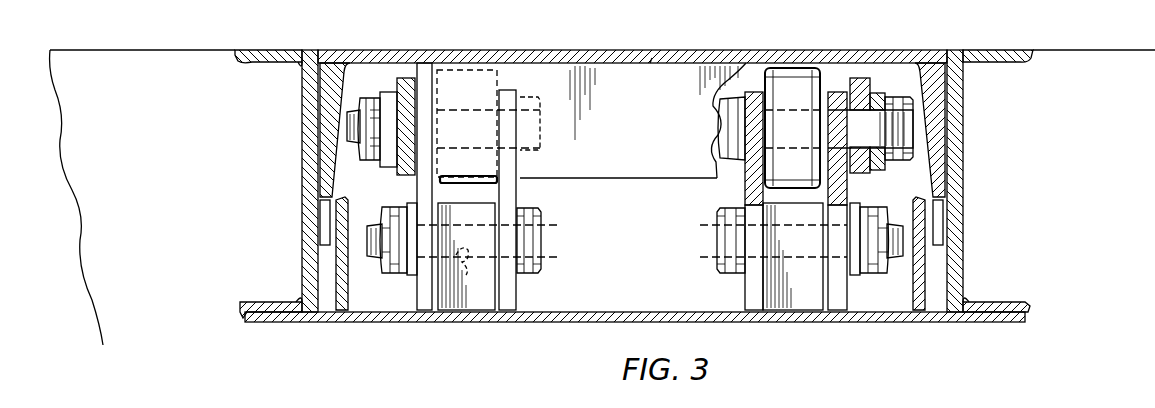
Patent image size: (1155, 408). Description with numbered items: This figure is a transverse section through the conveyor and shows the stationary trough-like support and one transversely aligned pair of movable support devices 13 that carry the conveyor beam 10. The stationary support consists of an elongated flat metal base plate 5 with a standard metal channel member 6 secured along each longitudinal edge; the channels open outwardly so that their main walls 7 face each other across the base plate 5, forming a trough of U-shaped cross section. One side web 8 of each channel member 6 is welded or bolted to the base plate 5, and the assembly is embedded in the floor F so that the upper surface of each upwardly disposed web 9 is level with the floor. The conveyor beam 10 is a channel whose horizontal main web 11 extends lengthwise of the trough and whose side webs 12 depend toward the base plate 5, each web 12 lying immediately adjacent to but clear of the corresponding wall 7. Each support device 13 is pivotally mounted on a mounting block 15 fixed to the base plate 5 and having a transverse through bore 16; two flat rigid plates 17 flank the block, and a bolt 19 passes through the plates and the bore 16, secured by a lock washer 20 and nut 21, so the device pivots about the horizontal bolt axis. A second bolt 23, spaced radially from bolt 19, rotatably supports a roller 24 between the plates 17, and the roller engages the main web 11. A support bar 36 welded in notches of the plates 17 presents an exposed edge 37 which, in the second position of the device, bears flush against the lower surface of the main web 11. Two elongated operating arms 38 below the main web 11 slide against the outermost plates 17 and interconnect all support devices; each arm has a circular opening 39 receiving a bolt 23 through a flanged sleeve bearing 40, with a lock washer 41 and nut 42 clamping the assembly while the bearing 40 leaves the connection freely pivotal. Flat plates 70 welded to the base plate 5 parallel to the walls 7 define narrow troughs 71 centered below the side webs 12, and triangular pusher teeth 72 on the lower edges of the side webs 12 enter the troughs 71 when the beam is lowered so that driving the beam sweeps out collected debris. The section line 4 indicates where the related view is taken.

The floor F is at (1100, 50).
The section line 4- 4 is at (553, 8).
The base plate 5 is at (962, 325).
The channel member 6 is at (302, 14).
The main wall 7 is at (302, 155).
The side web 8 is at (276, 302).
The upwardly disposed web 9 is at (268, 50).
The conveyor beam 10 is at (722, 14).
The main web 11 is at (612, 50).
The side web 12 is at (332, 108).
The support device 13 is at (365, 290).
The mounting block 15 is at (483, 312).
The through bore 16 is at (466, 272).
The plate 17 is at (428, 312).
The bolt 19 is at (541, 265).
The lock washer 20 is at (411, 276).
The nut 21 is at (393, 277).
The second bolt 23 is at (546, 140).
The roller 24 is at (780, 74).
The support bar 36 is at (628, 178).
The exposed edge 37 is at (650, 63).
The operating arm 38 is at (408, 78).
The circular opening 39 is at (878, 186).
The sleeve bearing 40 is at (392, 170).
The lock washer 41 is at (386, 168).
The nut 42 is at (372, 162).
The plate 70 is at (348, 200).
The trough 71 is at (323, 268).
The pusher tooth 72 is at (325, 224).